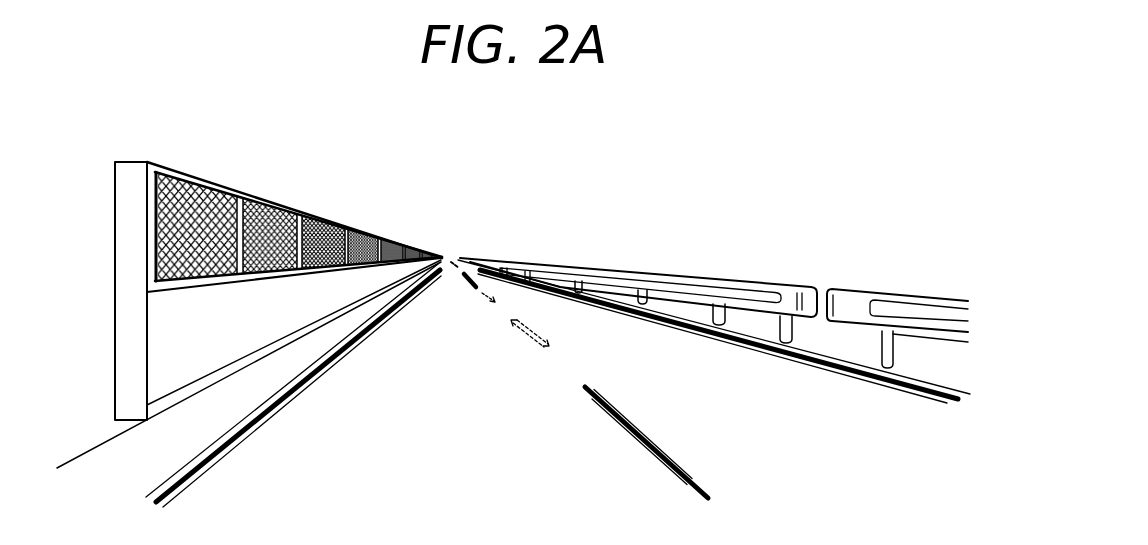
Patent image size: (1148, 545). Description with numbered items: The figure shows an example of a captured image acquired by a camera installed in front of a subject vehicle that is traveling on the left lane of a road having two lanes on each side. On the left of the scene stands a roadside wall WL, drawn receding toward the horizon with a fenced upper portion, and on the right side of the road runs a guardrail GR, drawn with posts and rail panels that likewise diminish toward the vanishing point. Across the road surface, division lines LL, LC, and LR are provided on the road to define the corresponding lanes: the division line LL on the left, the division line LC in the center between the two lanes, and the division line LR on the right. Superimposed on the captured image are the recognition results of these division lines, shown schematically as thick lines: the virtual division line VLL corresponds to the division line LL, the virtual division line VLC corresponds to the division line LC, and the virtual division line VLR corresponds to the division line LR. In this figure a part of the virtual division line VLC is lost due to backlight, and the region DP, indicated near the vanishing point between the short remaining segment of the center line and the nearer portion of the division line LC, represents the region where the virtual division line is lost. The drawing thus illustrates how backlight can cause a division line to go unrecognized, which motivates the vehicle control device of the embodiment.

The roadside wall WL is at (306, 201).
The guardrail GR is at (703, 279).
The region where the virtual division line is lost DP is at (573, 385).
The division line LL is at (183, 488).
The virtual division line VLL is at (215, 457).
The division line LC is at (670, 452).
The virtual division line VLC is at (688, 485).
The division line LR is at (932, 402).
The virtual division line VLR is at (893, 388).